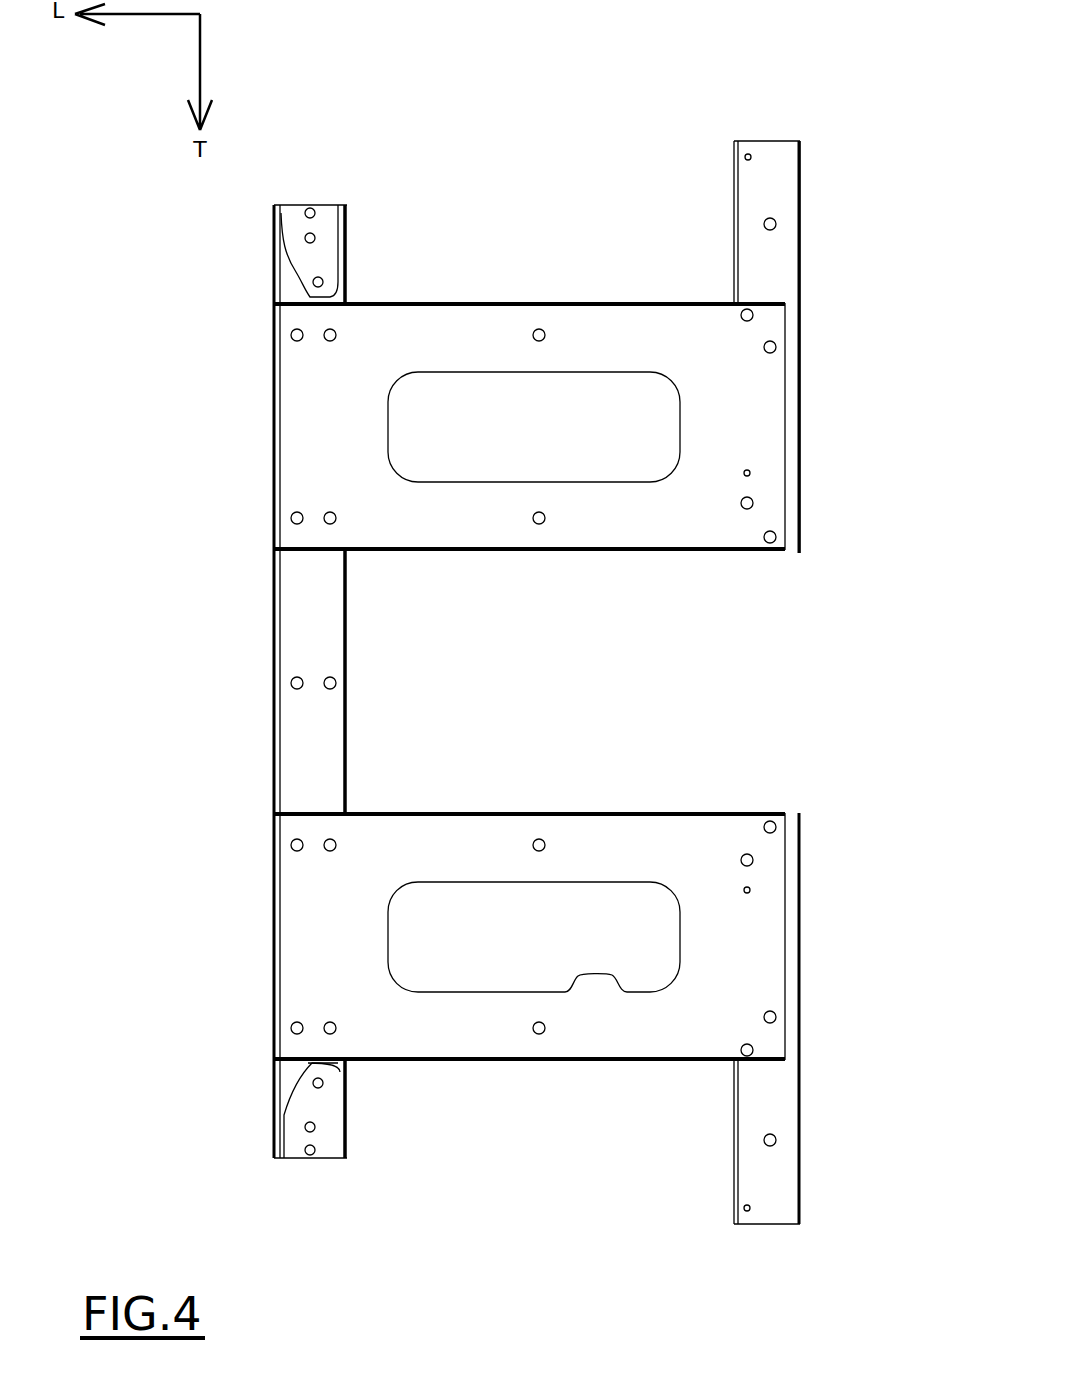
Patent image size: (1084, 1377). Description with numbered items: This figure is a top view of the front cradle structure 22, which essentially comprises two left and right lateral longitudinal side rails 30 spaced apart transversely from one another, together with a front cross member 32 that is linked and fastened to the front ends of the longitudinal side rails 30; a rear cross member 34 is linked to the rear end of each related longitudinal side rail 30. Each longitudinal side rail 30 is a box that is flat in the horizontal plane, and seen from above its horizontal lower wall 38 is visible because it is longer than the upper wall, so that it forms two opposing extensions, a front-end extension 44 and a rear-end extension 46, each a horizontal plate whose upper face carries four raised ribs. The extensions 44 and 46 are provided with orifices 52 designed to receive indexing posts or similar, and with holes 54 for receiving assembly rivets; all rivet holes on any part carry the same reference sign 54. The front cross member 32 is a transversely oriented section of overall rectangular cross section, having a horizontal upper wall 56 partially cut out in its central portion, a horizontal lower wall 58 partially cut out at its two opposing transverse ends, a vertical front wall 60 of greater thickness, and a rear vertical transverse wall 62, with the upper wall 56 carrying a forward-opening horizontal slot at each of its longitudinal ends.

The front cradle structure 22 is at (803, 688).
The longitudinal side rail 30 is at (620, 580).
The front cross member 32 is at (370, 733).
The second longitudinal rail 34 is at (823, 173).
The horizontal lower wall 38 is at (620, 307).
The front-end extension 44 is at (318, 393).
The rear-end extension 46 is at (752, 415).
The orifices 52 is at (777, 224).
The holes 54 is at (749, 152).
The horizontal upper wall 56 is at (326, 215).
The horizontal lower wall 58 is at (286, 781).
The vertical front wall 60 is at (273, 735).
The rear vertical transverse wall 62 is at (347, 790).